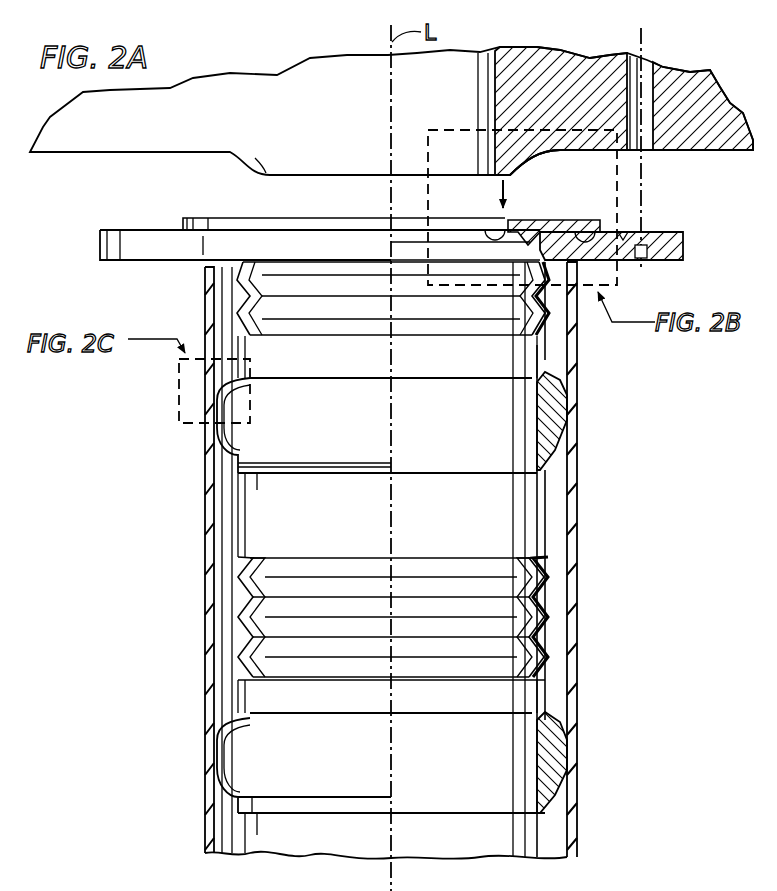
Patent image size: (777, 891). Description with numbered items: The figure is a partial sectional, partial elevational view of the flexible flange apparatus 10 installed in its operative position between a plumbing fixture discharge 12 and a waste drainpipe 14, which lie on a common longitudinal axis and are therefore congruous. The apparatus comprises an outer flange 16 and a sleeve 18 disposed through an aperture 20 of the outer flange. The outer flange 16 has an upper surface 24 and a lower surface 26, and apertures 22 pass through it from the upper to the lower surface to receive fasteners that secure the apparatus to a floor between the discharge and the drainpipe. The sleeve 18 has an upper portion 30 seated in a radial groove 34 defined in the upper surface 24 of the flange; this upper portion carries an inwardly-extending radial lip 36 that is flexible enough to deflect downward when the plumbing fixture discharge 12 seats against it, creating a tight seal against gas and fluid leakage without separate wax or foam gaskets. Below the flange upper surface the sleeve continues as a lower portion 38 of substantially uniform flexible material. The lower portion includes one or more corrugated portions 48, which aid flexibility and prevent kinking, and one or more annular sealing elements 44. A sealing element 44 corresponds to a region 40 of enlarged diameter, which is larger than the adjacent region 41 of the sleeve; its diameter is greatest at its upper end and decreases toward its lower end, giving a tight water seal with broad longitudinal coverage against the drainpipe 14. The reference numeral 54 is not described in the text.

The flexible flange apparatus 10 is at (98, 576).
The plumbing fixture discharge 12 is at (688, 72).
The waste drainpipe 14 is at (205, 688).
The outer flange 16 is at (100, 245).
The sleeve 18 is at (550, 502).
The aperture 20 is at (563, 228).
The apertures 22 is at (650, 268).
The upper surface 24 is at (155, 230).
The lower surface 26 is at (155, 261).
The upper portion 30 is at (226, 215).
The radial groove 34 is at (592, 238).
The inwardly-extending radial lip 36 is at (503, 238).
The lower portion 38 is at (232, 517).
The region 40 is at (157, 382).
The region 41 is at (157, 477).
The sealing element 44 is at (560, 378).
The corrugated portion 48 is at (545, 300).
The curved surface 54 is at (537, 157).